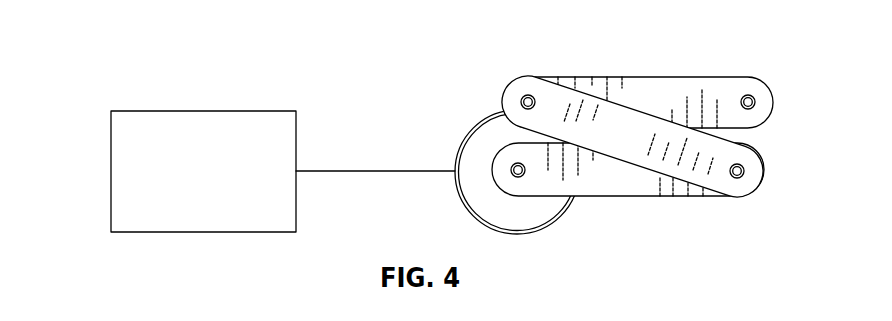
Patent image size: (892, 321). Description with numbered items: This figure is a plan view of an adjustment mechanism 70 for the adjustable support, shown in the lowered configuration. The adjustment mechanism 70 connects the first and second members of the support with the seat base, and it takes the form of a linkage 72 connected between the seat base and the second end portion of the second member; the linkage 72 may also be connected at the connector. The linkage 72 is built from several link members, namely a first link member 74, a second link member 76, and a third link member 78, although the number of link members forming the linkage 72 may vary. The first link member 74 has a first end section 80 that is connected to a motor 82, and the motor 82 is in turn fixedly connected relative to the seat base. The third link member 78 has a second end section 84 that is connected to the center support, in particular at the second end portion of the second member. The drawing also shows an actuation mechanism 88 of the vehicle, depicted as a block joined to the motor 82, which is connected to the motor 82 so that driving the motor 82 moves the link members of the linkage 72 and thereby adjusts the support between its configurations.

The adjustment mechanism 70 is at (623, 133).
The linkage 72 is at (638, 70).
The first link member 74 is at (586, 196).
The second link member 76 is at (622, 152).
The third link member 78 is at (641, 88).
The first end section 80 is at (506, 182).
The motor 82 is at (474, 123).
The second end section 84 is at (764, 100).
The actuation mechanism 88 is at (111, 171).